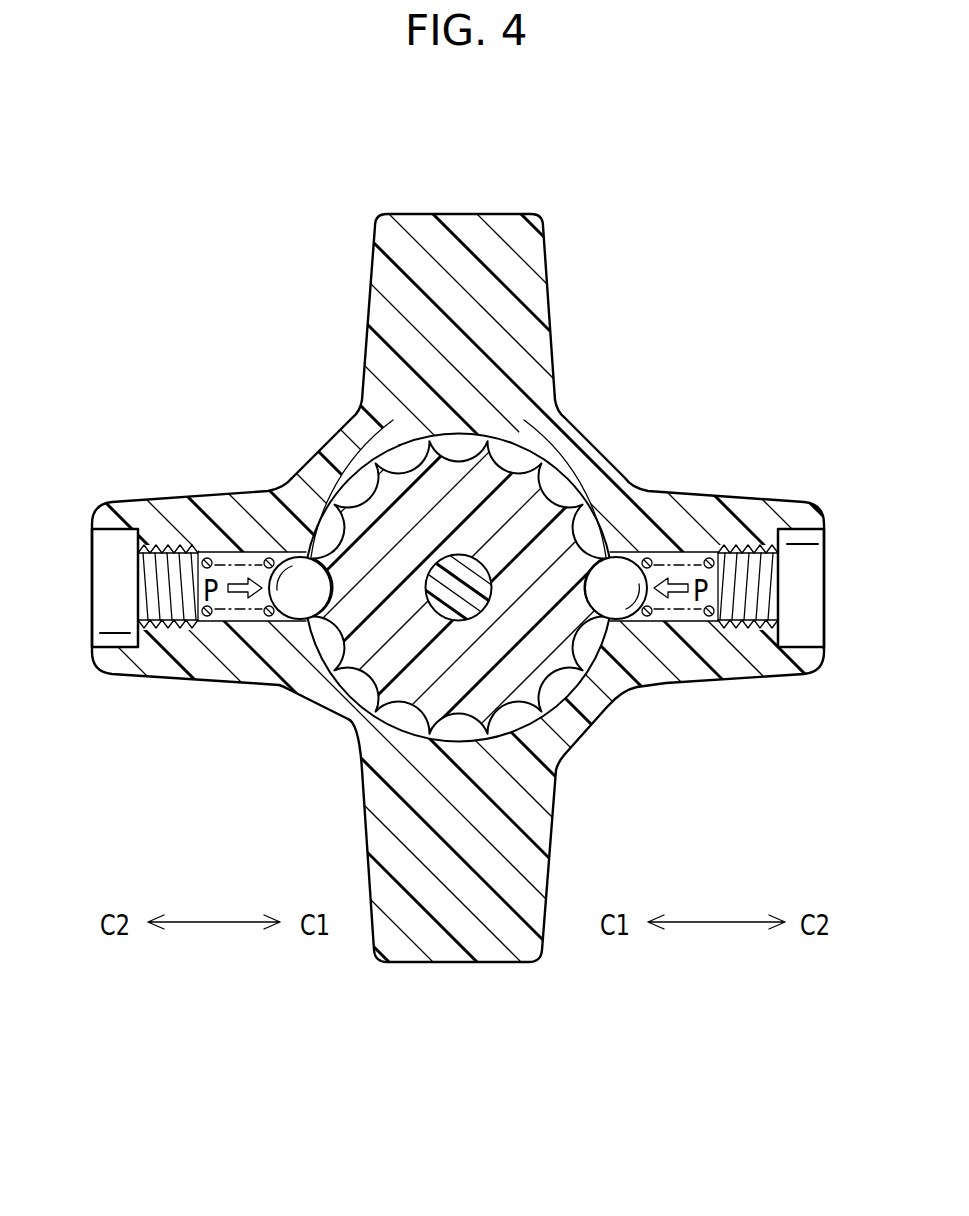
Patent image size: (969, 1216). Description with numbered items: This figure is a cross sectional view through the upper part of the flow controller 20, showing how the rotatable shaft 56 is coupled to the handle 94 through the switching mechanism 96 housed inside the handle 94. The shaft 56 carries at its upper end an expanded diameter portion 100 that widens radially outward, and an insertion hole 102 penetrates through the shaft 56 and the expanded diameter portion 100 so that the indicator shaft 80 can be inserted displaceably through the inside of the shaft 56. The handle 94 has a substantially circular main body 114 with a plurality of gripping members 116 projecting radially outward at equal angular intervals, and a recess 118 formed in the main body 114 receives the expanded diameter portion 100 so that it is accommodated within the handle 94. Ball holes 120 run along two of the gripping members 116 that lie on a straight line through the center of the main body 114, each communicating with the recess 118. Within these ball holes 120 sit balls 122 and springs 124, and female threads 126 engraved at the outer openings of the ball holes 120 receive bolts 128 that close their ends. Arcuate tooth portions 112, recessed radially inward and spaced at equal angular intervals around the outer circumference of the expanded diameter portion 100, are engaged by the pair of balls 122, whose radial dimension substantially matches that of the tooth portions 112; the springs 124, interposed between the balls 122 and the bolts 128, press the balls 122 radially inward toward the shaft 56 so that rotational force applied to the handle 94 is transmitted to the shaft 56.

The flow controller 20 is at (664, 376).
The shaft 56 is at (364, 479).
The indicator shaft 80 is at (348, 478).
The handle 94 is at (366, 300).
The switching mechanism 96 is at (553, 481).
The expanded diameter portion 100 is at (500, 687).
The insertion hole 102 is at (478, 588).
The tooth portions 112 is at (365, 780).
The main body 114 is at (341, 717).
The gripping members 116 is at (455, 232).
The recess 118 is at (470, 455).
The ball holes 120 is at (209, 617).
The balls 122 is at (298, 600).
The springs 124 is at (190, 553).
The female threads 126 is at (150, 542).
The bolts 128 is at (108, 559).